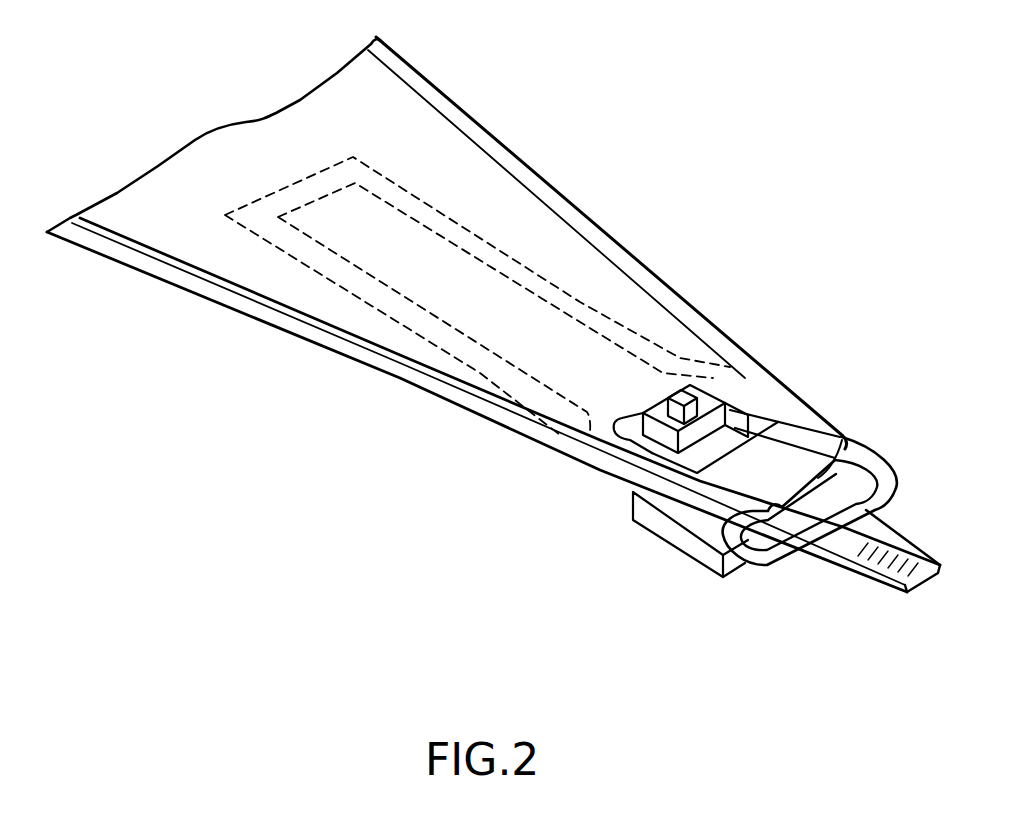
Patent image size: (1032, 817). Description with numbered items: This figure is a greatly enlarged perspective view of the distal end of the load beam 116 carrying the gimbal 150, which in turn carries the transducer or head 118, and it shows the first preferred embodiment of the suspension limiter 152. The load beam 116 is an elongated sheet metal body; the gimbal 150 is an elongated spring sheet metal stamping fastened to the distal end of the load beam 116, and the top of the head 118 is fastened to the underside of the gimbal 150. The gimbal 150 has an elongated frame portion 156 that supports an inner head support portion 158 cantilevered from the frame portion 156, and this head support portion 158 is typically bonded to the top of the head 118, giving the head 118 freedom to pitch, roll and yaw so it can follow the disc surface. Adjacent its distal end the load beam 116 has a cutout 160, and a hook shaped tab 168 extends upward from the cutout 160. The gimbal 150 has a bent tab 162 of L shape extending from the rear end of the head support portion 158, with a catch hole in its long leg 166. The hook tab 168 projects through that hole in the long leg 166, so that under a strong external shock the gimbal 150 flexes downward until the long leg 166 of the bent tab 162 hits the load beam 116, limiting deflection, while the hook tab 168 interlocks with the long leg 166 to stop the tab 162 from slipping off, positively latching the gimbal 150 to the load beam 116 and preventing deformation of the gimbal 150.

The load beam 116 is at (414, 140).
The transducer or head 118 is at (713, 572).
The gimbal 150 is at (878, 462).
The suspension limiter 152 is at (713, 389).
The frame portion 156 is at (513, 258).
The inner head support portion 158 is at (728, 442).
The cutout 160 is at (653, 457).
The bent tab 162 is at (725, 398).
The long leg 166 is at (612, 433).
The hook shaped tab 168 is at (680, 390).